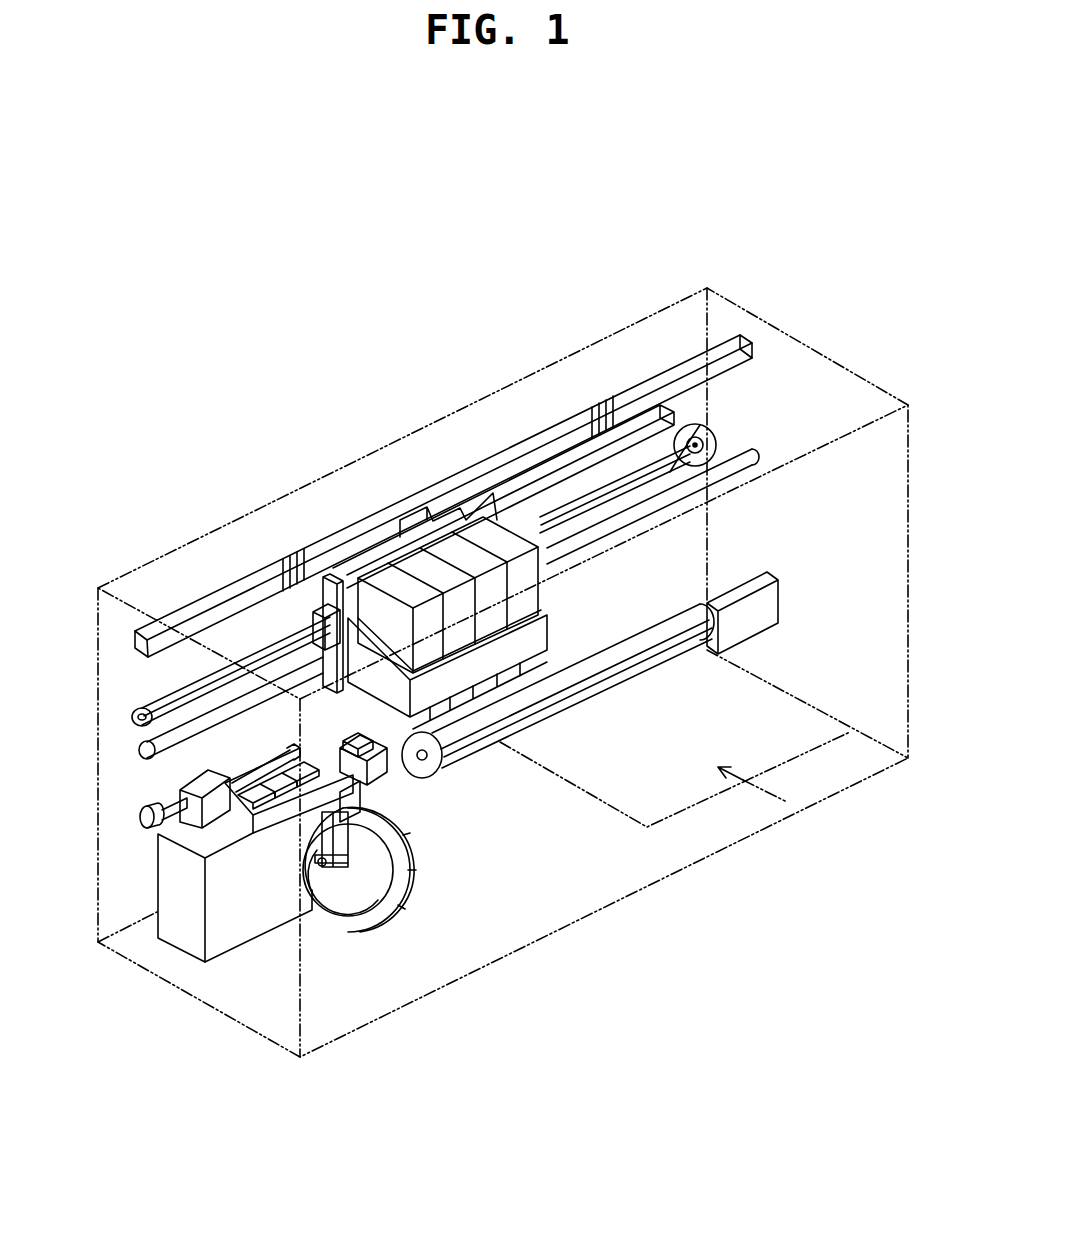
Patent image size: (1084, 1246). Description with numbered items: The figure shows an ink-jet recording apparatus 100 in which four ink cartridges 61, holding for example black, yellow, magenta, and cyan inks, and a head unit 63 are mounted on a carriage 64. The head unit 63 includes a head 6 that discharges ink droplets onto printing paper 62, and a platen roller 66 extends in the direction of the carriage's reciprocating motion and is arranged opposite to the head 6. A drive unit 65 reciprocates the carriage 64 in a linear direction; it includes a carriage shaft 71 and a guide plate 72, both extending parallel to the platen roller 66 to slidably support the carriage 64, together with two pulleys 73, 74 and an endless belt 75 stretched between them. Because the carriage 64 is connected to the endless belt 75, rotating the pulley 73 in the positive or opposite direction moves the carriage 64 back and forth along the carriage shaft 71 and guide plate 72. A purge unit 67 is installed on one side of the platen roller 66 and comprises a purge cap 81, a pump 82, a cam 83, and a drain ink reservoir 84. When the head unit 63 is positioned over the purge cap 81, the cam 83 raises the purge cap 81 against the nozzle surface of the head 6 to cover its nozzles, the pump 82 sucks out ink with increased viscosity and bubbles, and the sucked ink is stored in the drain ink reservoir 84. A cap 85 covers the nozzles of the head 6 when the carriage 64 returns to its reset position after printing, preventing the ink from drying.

The ink-jet recording apparatus 100 is at (370, 290).
The head 6 is at (552, 660).
The ink cartridges 61 is at (473, 527).
The printing paper 62 is at (827, 743).
The head unit 63 is at (553, 605).
The carriage 64 is at (333, 583).
The drive unit 65 is at (625, 468).
The platen roller 66 is at (667, 610).
The purge unit 67 is at (317, 930).
The carriage shaft 71 is at (760, 447).
The guide plate 72 is at (637, 397).
The pulley 73 is at (702, 443).
The pulley 74 is at (132, 714).
The endless belt 75 is at (752, 395).
The purge cap 81 is at (306, 742).
The pump 82 is at (400, 912).
The cam 83 is at (400, 890).
The drain ink reservoir 84 is at (240, 937).
The cap 85 is at (220, 800).